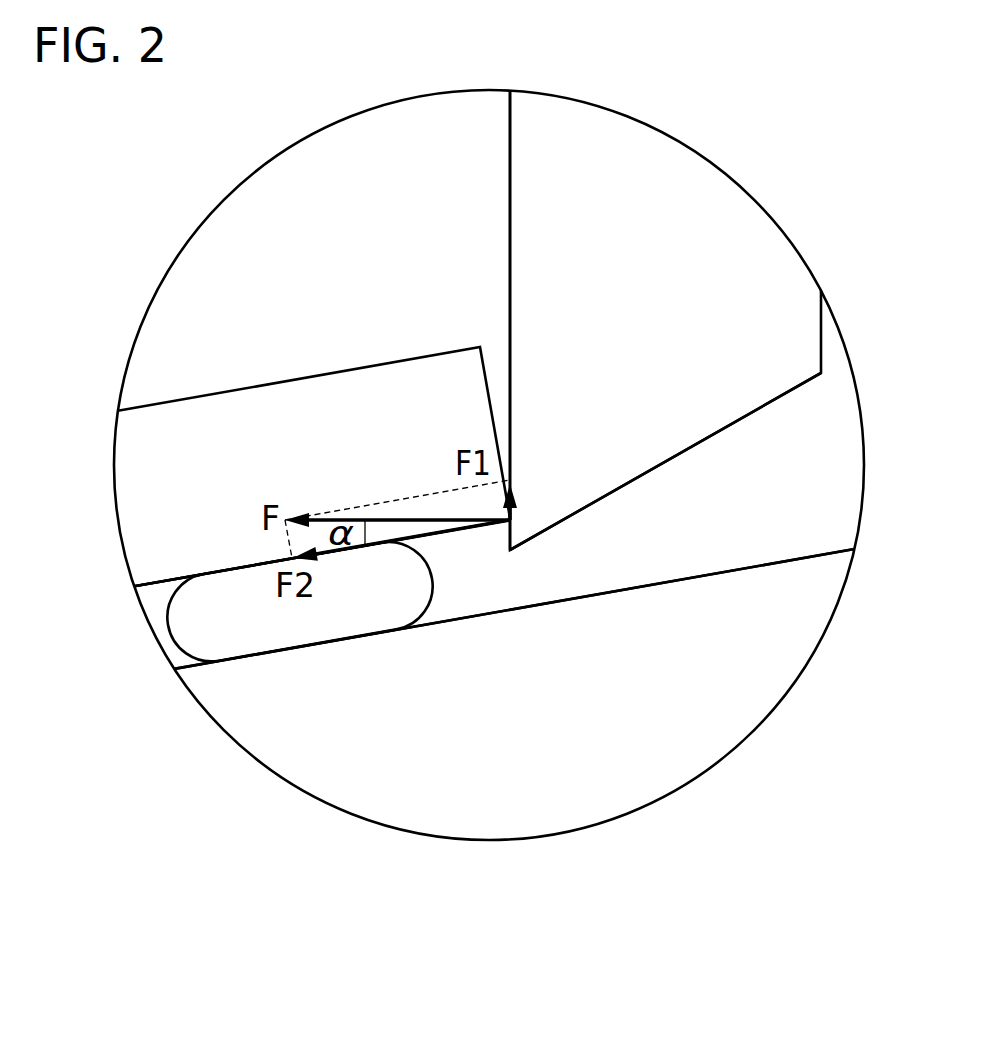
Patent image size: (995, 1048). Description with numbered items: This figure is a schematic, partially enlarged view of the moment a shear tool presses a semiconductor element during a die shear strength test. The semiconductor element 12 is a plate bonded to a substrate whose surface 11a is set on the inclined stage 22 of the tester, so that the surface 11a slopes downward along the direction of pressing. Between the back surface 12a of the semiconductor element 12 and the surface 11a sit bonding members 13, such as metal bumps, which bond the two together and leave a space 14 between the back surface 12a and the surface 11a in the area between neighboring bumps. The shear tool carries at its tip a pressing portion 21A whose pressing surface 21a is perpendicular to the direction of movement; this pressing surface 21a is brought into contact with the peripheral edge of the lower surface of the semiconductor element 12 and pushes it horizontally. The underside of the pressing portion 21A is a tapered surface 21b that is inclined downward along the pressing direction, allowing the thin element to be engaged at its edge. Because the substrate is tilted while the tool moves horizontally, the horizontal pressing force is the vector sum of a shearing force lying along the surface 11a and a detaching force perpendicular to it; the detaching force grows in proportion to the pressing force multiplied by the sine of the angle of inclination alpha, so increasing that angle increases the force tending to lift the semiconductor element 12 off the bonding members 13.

The surface of the substrate 11a is at (237, 657).
The semiconductor element 12 is at (225, 427).
The back surface of the semiconductor element 12a is at (245, 567).
The bonding member 13 is at (350, 615).
The space 14 is at (158, 592).
The pressing portion 21A is at (577, 438).
The pressing surface 21a is at (510, 420).
The tapered surface 21b is at (593, 502).
The stage 22 is at (603, 712).